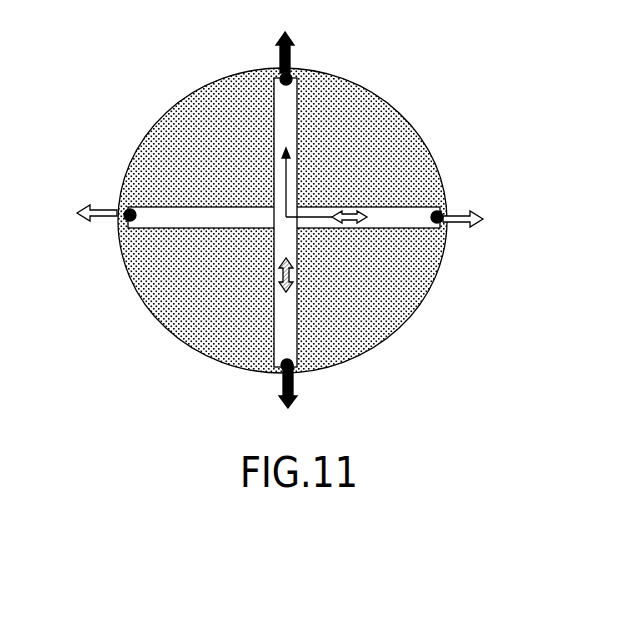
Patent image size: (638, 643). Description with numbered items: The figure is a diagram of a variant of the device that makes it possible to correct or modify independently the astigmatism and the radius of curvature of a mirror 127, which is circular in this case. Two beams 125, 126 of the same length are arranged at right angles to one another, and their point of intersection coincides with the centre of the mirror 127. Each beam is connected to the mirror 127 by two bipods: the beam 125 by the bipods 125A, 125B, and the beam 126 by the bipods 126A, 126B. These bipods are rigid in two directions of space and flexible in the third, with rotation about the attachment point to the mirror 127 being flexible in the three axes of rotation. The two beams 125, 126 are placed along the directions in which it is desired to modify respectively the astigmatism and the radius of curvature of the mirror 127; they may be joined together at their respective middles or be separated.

The beam 125 is at (285, 128).
The bipod 125A is at (288, 82).
The bipod 125B is at (286, 362).
The beam 126 is at (177, 217).
The bipod 126A is at (134, 216).
The bipod 126B is at (434, 217).
The mirror 127 is at (405, 292).